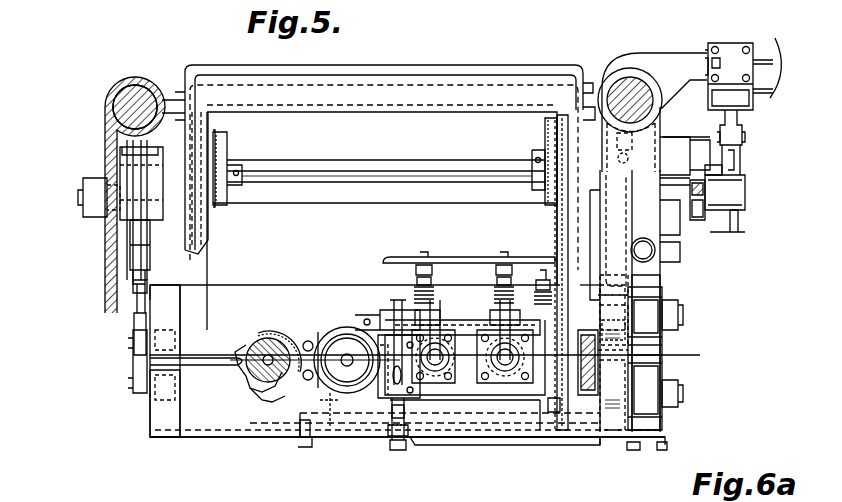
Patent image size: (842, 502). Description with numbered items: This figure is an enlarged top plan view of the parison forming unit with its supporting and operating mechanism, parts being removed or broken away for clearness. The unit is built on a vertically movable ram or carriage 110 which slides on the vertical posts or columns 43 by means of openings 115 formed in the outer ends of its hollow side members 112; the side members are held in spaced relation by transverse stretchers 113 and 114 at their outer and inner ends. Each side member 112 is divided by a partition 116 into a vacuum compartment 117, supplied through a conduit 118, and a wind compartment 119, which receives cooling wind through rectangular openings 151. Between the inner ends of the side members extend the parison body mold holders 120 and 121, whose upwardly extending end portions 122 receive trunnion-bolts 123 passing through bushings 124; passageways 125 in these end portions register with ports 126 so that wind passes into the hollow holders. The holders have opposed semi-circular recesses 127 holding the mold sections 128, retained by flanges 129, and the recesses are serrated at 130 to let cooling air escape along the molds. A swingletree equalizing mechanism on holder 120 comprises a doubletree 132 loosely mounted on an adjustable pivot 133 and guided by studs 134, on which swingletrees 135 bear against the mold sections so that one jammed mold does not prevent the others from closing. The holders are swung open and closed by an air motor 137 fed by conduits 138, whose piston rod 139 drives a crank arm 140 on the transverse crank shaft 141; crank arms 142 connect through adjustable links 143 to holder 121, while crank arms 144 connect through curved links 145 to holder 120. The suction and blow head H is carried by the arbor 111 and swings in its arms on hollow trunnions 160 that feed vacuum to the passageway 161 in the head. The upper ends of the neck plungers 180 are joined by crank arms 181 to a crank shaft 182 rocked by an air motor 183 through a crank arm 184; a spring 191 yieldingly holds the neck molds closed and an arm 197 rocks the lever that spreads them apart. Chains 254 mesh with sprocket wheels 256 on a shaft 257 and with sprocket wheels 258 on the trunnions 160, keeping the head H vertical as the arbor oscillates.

The vertical posts or columns 43 is at (132, 107).
The ram or carriage 110 is at (658, 452).
The arbor 111 is at (212, 240).
The hollow side members 112 is at (652, 350).
The transverse stretcher 113 is at (388, 113).
The transverse stretcher 114 is at (578, 445).
The openings 115 is at (143, 80).
The partition 116 is at (640, 287).
The vacuum compartment 117 is at (652, 222).
The conduit 118 is at (657, 250).
The wind compartment 119 is at (655, 365).
The parison body mold holder 120 is at (218, 422).
The parison body mold holder 121 is at (282, 285).
The upwardly extending end portions 122 is at (168, 300).
The trunnion-bolts 123 is at (680, 315).
The bushings 124 is at (652, 298).
The passageways 125 is at (652, 345).
The ports 126 is at (650, 327).
The semi-circular recesses 127 is at (262, 340).
The mold sections 128 is at (252, 340).
The flanges 129 is at (325, 335).
The serrations 130 is at (244, 352).
The doubletree 132 is at (360, 420).
The adjustable pivot 133 is at (380, 420).
The studs 134 is at (303, 440).
The swingletrees 135 is at (340, 388).
The air motor 137 is at (731, 55).
The conduits 138 is at (770, 62).
The piston rod 139 is at (745, 118).
The crank arm 140 is at (746, 160).
The crank shaft 141 is at (350, 192).
The crank arms 142 is at (114, 230).
The adjustable link 143 is at (134, 278).
The crank arms 144 is at (124, 170).
The curved links 145 is at (140, 252).
The rectangular openings 151 is at (652, 360).
The hollow trunnions 160 is at (594, 388).
The vacuum passageway 161 is at (560, 404).
The plungers 180 is at (428, 400).
The crank arms 181 is at (465, 360).
The crank shaft 182 is at (388, 306).
The air motor 183 is at (385, 398).
The crank arm 184 is at (400, 302).
The spring 191 is at (500, 290).
The arm 197 is at (545, 300).
The chains 254 is at (556, 214).
The sprocket wheels 256 is at (228, 138).
The shaft 257 is at (437, 156).
The sprocket wheels 258 is at (562, 430).
The suction and blow head structure H is at (490, 330).